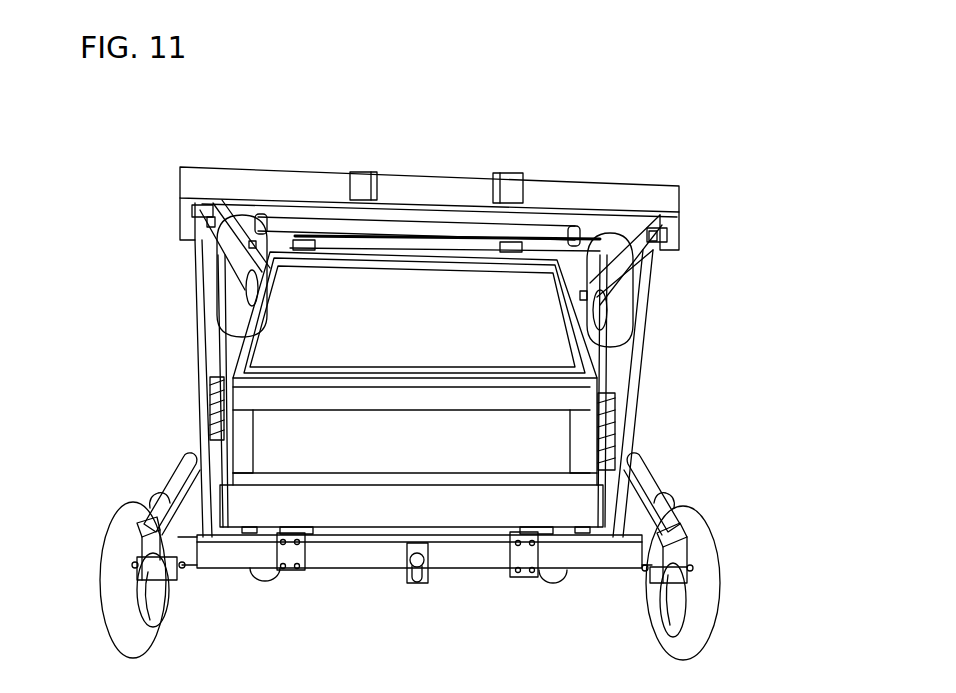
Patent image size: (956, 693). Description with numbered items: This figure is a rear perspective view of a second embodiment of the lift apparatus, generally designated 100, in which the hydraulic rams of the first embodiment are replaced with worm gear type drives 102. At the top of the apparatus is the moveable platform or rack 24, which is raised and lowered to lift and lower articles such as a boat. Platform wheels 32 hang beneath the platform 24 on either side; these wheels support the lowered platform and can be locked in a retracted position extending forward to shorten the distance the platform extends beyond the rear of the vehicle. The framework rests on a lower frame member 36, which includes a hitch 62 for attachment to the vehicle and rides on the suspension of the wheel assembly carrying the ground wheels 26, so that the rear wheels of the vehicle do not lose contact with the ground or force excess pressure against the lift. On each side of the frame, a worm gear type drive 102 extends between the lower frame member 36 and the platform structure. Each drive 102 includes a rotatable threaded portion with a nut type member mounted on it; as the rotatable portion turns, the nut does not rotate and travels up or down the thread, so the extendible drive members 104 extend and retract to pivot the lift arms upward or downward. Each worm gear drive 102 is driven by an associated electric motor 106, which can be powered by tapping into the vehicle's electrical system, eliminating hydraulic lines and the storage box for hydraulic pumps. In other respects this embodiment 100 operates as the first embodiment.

The second embodiment of the lift apparatus 100 is at (409, 375).
The platform 24 is at (567, 181).
The platform wheels 32 is at (220, 289).
The lower frame member 36 is at (460, 561).
The hitch 62 is at (407, 567).
The worm gear type drives 102 is at (178, 482).
The extendible drive members 104 is at (194, 447).
The electric motor 106 is at (157, 503).
The wheels 26 is at (110, 587).